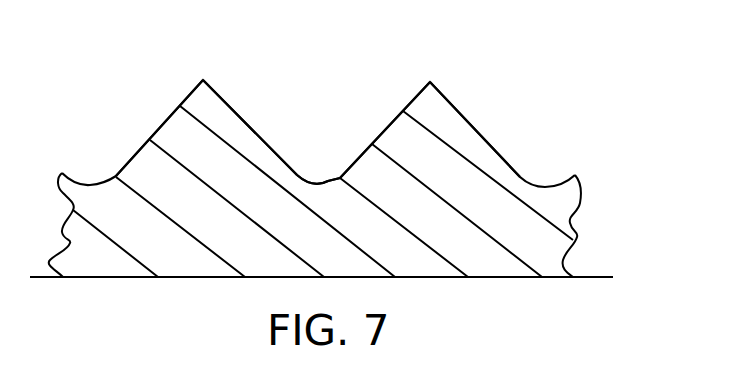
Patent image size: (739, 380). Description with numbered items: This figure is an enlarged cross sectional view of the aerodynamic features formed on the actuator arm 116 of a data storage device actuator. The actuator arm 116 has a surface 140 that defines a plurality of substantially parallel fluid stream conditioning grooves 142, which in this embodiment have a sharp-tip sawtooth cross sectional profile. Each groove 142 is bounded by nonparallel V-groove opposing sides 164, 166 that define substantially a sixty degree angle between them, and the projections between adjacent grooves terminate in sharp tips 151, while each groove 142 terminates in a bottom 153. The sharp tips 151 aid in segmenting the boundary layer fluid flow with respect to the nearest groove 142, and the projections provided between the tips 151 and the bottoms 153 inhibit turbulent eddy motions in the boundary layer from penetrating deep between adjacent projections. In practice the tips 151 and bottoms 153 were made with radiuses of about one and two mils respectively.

The actuator arm 116 is at (507, 279).
The surface 140 is at (155, 133).
The fluid stream conditioning groove 142 is at (301, 88).
The sharp tip 151 is at (430, 82).
The bottom 153 is at (328, 181).
The V-groove opposing side 164 is at (238, 113).
The V-groove opposing side 166 is at (393, 120).